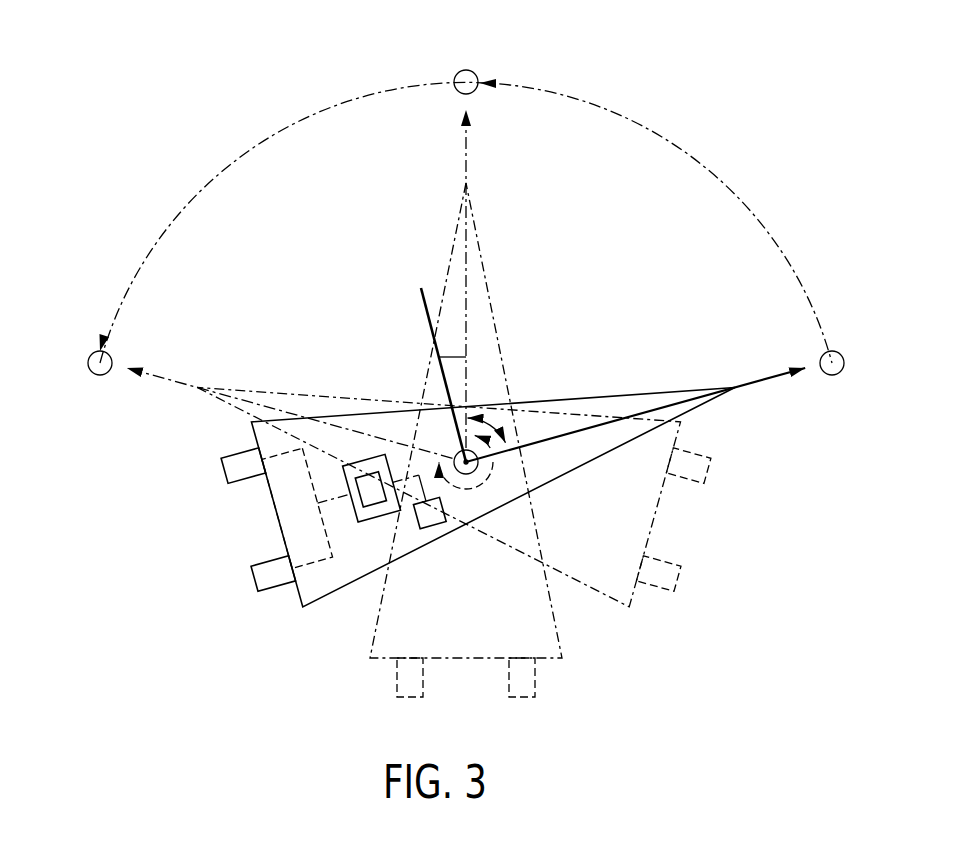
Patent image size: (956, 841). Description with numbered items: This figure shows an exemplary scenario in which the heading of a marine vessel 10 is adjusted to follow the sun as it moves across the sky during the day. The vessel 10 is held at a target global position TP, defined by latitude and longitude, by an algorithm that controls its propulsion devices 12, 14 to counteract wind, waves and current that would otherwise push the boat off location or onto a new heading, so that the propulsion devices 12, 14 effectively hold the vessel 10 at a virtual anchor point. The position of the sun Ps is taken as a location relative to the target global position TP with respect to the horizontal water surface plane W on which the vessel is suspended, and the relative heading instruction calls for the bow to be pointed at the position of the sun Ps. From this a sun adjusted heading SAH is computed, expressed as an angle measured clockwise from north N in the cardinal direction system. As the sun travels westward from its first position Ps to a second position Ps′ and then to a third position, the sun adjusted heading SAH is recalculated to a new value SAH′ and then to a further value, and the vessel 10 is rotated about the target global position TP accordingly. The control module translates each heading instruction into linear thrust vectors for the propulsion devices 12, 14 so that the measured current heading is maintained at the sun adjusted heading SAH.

The marine vessel 10 is at (493, 310).
The propulsion device 12 is at (222, 470).
The propulsion device 14 is at (252, 580).
The north N is at (438, 363).
The target global position TP is at (456, 458).
The position of the sun Ps is at (832, 377).
The second position of the sun Ps′ is at (470, 70).
The sun adjusted heading SAH is at (490, 422).
The sun adjusted heading SAH′ is at (456, 357).
The horizontal water surface plane W is at (691, 270).